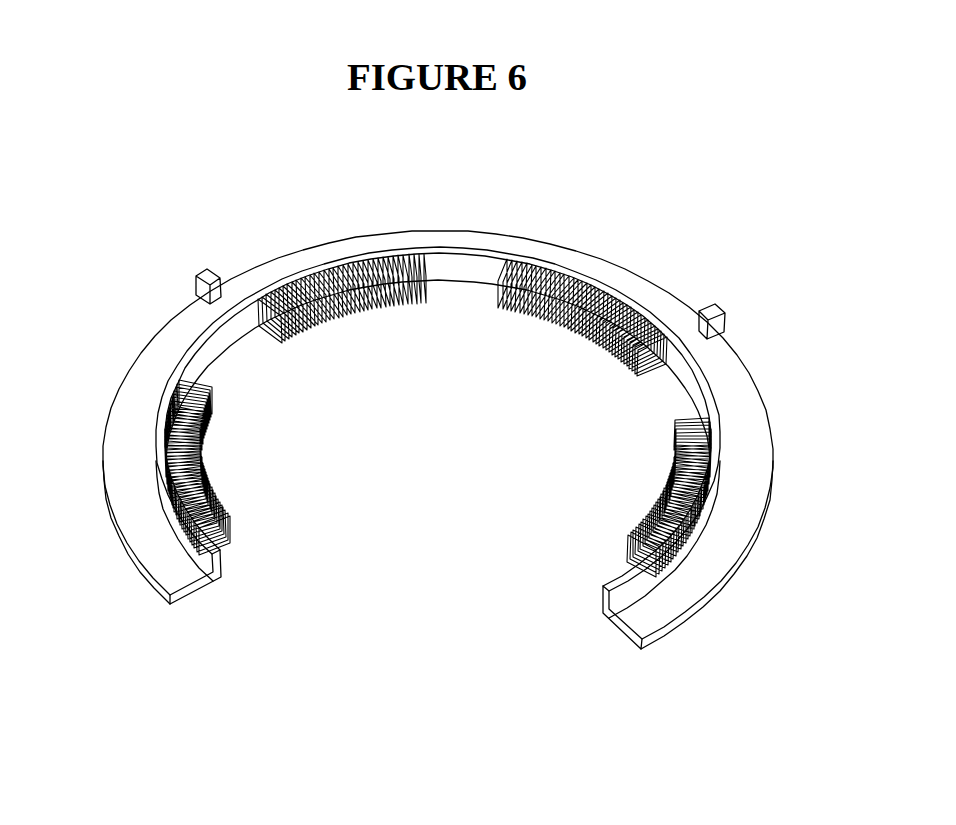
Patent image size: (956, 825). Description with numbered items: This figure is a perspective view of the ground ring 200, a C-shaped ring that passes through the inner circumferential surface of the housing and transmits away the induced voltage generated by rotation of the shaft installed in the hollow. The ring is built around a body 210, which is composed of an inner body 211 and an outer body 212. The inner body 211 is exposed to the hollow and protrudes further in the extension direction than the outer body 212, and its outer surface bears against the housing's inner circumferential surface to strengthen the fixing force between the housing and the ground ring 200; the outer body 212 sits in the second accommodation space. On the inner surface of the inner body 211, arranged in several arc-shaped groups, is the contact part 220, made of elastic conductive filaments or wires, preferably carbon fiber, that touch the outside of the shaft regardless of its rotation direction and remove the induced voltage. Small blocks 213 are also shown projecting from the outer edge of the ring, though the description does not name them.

The ground ring 200 is at (148, 177).
The body 210 is at (301, 579).
The inner body 211 is at (216, 567).
The outer body 212 is at (197, 597).
The mounting block 213 is at (209, 270).
The contact part 220 is at (213, 466).